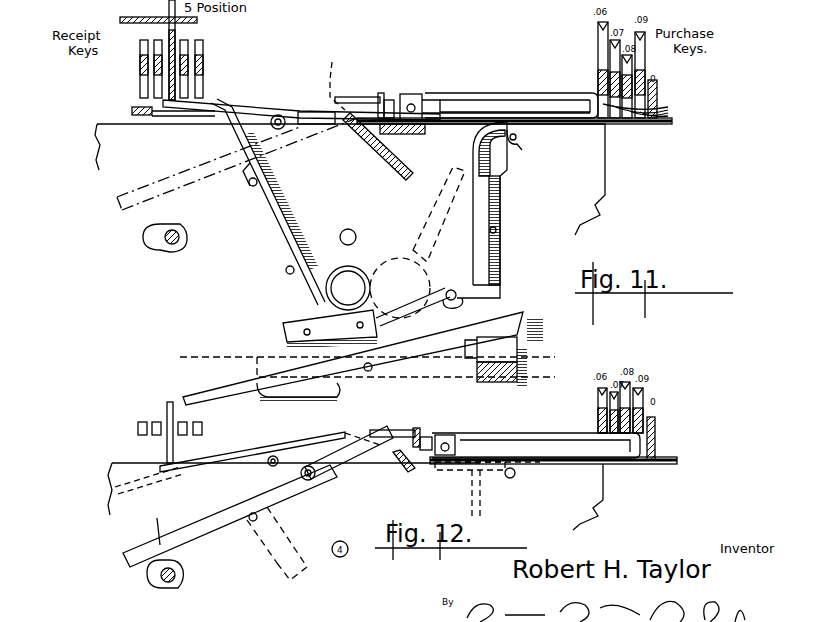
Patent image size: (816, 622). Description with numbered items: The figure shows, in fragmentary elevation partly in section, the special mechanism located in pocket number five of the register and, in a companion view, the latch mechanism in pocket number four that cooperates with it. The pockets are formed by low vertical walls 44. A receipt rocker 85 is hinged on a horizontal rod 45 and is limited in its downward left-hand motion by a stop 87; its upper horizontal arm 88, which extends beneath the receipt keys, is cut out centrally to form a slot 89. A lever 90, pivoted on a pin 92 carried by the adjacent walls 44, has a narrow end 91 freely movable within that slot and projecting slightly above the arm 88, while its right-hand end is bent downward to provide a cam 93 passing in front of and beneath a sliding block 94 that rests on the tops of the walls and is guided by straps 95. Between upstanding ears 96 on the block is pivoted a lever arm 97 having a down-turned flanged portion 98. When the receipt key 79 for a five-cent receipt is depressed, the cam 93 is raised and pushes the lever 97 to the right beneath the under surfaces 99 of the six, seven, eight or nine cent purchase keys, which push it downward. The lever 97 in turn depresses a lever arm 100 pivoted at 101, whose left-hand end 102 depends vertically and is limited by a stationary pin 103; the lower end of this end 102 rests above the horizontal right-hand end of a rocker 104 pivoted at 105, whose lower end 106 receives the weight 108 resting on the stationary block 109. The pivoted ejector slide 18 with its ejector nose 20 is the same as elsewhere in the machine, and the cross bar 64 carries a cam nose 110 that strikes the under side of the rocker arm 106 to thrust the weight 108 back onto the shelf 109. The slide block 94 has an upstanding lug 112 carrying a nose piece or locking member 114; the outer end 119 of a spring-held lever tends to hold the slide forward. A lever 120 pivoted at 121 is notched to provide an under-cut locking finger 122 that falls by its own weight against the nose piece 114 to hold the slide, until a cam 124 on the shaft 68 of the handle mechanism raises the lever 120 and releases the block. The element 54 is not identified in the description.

In FIG. 11, the pivoted ejector slide 18 is at (288, 390).
In FIG. 11, the ejector nose 20 is at (228, 394).
In FIG. 11, the vertical walls 44 is at (605, 180).
In FIG. 12, the vertical walls 44 is at (603, 503).
In FIG. 11, the horizontal rod 45 is at (249, 187).
In FIG. 12, the horizontal rod 45 is at (258, 517).
In FIG. 11, the pin 54 is at (375, 370).
In FIG. 11, the cross bar 64 is at (503, 383).
In FIG. 11, the shaft 68 is at (175, 231).
In FIG. 12, the shaft 68 is at (170, 583).
In FIG. 11, the receipt key 79 is at (176, 34).
In FIG. 12, the receipt key 79 is at (167, 411).
In FIG. 11, the receipt rocker 85 is at (270, 221).
In FIG. 12, the receipt rocker 85 is at (277, 554).
In FIG. 11, the stop 87 is at (286, 271).
In FIG. 11, the upper horizontal arm 88 is at (132, 110).
In FIG. 12, the upper horizontal arm 88 is at (125, 491).
In FIG. 11, the slot 89 is at (187, 118).
In FIG. 11, the lever 90 is at (305, 112).
In FIG. 11, the narrow end 91 is at (210, 100).
In FIG. 12, the narrow end 91 is at (160, 465).
In FIG. 11, the pin 92 is at (278, 115).
In FIG. 12, the pin 92 is at (271, 456).
In FIG. 11, the cam 93 is at (392, 160).
In FIG. 12, the cam 93 is at (400, 471).
In FIG. 11, the sliding block 94 is at (400, 134).
In FIG. 12, the sliding block 94 is at (432, 471).
In FIG. 11, the straps 95 is at (470, 113).
In FIG. 11, the upstanding ears 96 is at (412, 94).
In FIG. 12, the upstanding ears 96 is at (445, 445).
In FIG. 11, the lever arm 97 is at (550, 94).
In FIG. 12, the lever arm 97 is at (573, 434).
In FIG. 11, the down turned flanged portion 98 is at (590, 110).
In FIG. 12, the down turned flanged portion 98 is at (635, 450).
In FIG. 11, the under surfaces 99 is at (668, 108).
In FIG. 12, the under surfaces 99 is at (626, 421).
In FIG. 11, the lever arm 100 is at (625, 126).
In FIG. 12, the lever arm 100 is at (628, 466).
In FIG. 11, the pivot 101 is at (520, 150).
In FIG. 11, the left hand end 102 is at (483, 196).
In FIG. 12, the left hand end 102 is at (482, 501).
In FIG. 11, the stationary pin 103 is at (497, 231).
In FIG. 11, the rocker 104 is at (500, 286).
In FIG. 11, the pivot 105 is at (449, 290).
In FIG. 11, the lower end 106 is at (400, 275).
In FIG. 11, the weight 108 is at (350, 271).
In FIG. 11, the stationary block 109 is at (330, 329).
In FIG. 11, the cam nose 110 is at (466, 300).
In FIG. 12, the upstanding lug 112 is at (415, 428).
In FIG. 11, the nose piece 114 is at (347, 97).
In FIG. 12, the nose piece 114 is at (382, 430).
In FIG. 11, the outer end 119 is at (388, 99).
In FIG. 12, the outer end 119 is at (428, 438).
In FIG. 11, the lever 120 is at (158, 182).
In FIG. 12, the lever 120 is at (203, 528).
In FIG. 12, the pivot 121 is at (310, 481).
In FIG. 11, the locking finger 122 is at (338, 76).
In FIG. 12, the locking finger 122 is at (358, 432).
In FIG. 11, the cam 124 is at (162, 251).
In FIG. 12, the cam 124 is at (150, 576).